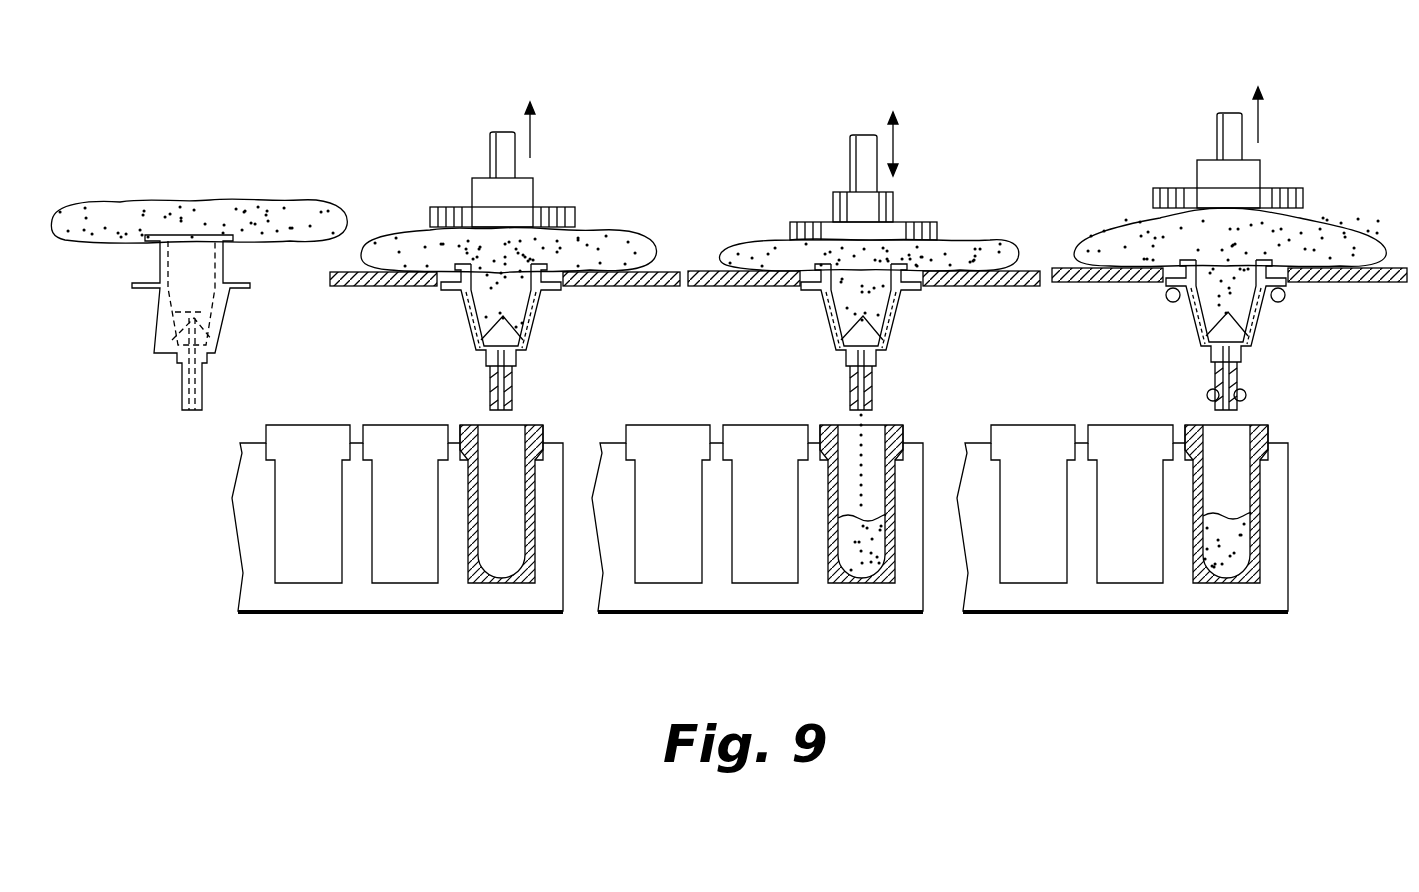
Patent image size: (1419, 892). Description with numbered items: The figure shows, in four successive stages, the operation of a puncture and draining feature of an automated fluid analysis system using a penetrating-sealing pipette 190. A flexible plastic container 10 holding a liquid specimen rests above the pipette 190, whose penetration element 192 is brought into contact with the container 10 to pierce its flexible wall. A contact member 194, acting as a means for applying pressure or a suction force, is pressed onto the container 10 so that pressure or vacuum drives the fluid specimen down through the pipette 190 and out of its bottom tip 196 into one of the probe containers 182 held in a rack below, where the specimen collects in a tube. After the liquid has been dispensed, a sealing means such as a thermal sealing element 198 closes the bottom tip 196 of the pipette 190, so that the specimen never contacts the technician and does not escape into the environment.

The plastic container 10 is at (235, 208).
The test probes 182 is at (497, 567).
The penetrating-sealing pipette 190 is at (230, 332).
The penetration element 192 is at (197, 317).
The contact member 194 is at (487, 192).
The bottom tip 196 is at (492, 402).
The thermal sealing element 198 is at (1286, 297).